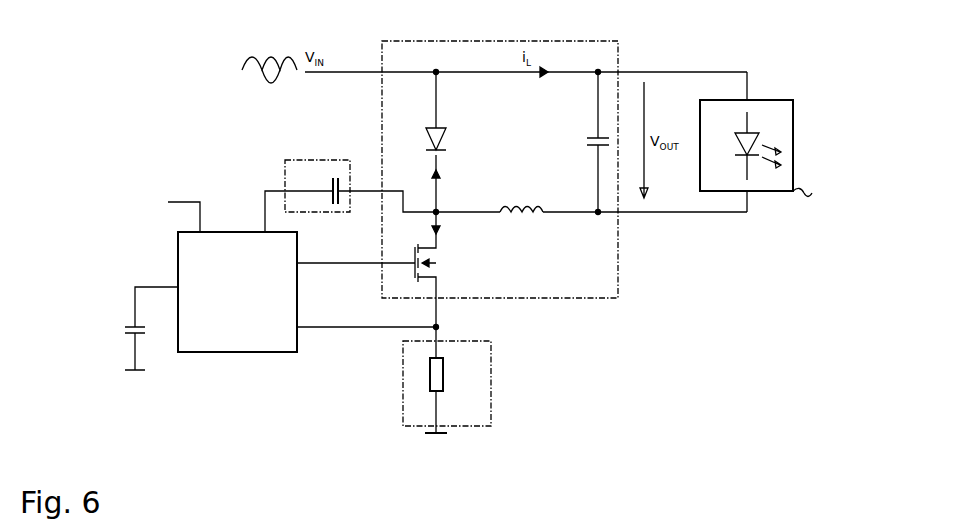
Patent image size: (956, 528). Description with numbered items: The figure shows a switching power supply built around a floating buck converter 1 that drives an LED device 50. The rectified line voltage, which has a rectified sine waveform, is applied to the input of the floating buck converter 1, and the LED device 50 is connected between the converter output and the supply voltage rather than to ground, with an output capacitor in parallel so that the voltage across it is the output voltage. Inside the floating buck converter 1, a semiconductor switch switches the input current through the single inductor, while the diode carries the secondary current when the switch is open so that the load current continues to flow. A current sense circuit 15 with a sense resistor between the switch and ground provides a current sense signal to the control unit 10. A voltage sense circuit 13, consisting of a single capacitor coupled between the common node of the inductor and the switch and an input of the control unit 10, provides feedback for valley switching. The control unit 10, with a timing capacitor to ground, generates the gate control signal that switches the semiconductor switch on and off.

The floating buck converter 1 is at (522, 173).
The control unit 10 is at (271, 277).
The voltage sense circuit 13 is at (350, 175).
The current sense circuit 15 is at (482, 392).
The LED device 50 is at (784, 170).